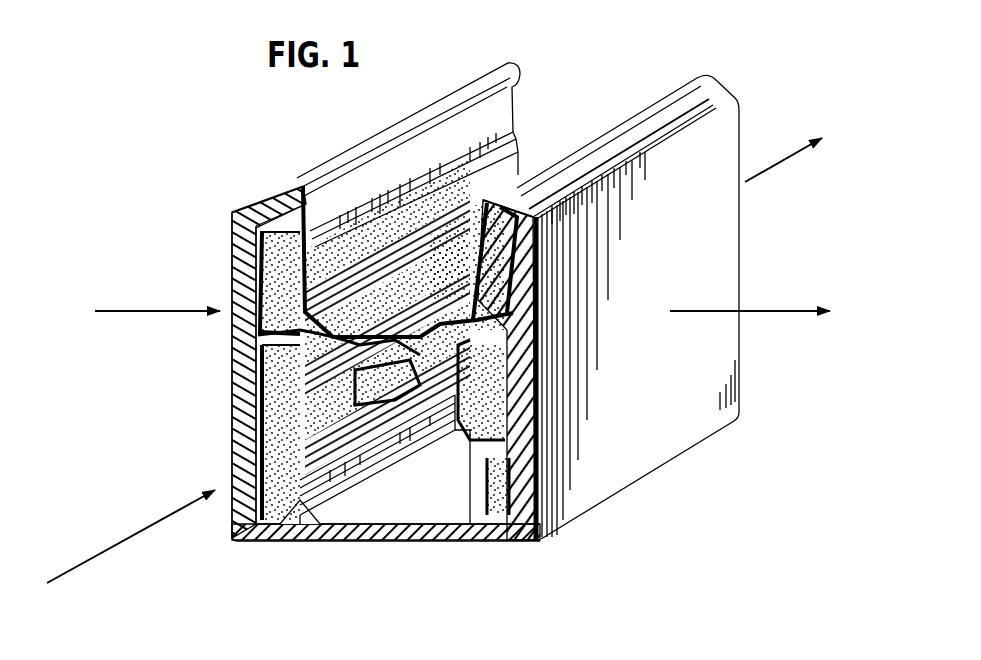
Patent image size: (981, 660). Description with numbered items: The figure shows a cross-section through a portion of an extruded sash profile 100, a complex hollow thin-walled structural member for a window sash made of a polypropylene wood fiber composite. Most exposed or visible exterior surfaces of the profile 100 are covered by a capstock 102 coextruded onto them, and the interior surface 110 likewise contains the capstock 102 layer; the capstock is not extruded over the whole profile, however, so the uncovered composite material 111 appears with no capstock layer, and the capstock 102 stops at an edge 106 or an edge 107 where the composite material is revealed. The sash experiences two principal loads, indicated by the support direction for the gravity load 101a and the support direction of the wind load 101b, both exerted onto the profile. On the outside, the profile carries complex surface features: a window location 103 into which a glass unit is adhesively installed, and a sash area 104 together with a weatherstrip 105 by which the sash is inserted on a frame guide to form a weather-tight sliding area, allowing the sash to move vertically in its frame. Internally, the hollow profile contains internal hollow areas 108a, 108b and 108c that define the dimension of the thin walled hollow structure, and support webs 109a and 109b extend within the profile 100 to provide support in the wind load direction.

The extruded sash profile 100 is at (637, 58).
The support direction for the gravity load 101a is at (100, 555).
The support direction of the wind load 101b is at (781, 312).
The capstock 102 is at (325, 160).
The window location 103 is at (552, 132).
The sash area 104 is at (412, 523).
The weatherstrip 105 is at (298, 540).
The edge of the capstock 106 is at (410, 262).
The edge of the capstock 107 is at (345, 477).
The internal hollow area 108a is at (262, 262).
The internal hollow area 108b is at (542, 420).
The internal hollow area 108c is at (393, 348).
The support web 109a is at (535, 477).
The support web 109b is at (380, 353).
The interior surface 110 is at (654, 284).
The uncovered composite material 111 is at (450, 297).